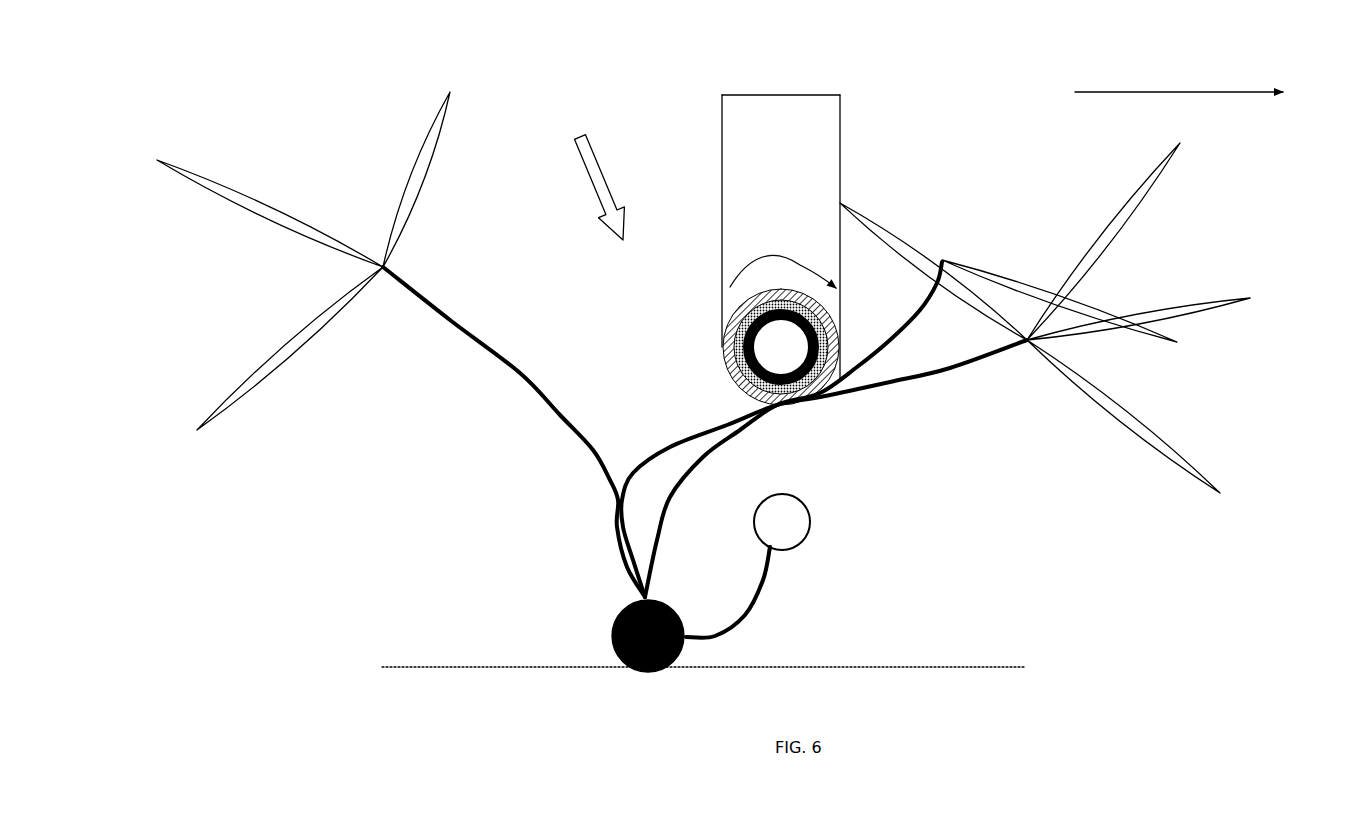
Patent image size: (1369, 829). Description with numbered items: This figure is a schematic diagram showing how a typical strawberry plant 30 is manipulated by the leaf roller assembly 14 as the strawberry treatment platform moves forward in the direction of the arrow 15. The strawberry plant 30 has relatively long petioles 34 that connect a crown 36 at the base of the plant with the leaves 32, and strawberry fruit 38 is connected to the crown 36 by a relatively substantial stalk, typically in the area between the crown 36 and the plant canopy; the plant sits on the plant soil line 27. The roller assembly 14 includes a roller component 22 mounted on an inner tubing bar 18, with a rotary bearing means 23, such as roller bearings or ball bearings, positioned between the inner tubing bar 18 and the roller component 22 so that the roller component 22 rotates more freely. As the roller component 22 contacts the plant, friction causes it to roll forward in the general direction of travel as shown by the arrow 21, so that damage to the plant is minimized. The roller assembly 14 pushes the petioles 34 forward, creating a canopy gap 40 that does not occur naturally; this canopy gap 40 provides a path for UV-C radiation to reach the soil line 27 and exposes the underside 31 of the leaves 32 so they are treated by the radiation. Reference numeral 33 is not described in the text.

The leaf roller assembly 14 is at (879, 162).
The direction of travel arrow 15 is at (1179, 78).
The inner tubing bar 18 is at (796, 327).
The roller rotation arrow 21 is at (755, 260).
The roller component 22 is at (720, 340).
The rotary bearing means 23 is at (828, 315).
The plant soil line 27 is at (517, 667).
The strawberry plant 30 is at (1004, 514).
The underside of the strawberry leaves 31 is at (433, 160).
The leaves 32 is at (262, 238).
The rotor blade 33 is at (407, 177).
The petioles 34 is at (668, 446).
The crown 36 is at (617, 620).
The strawberry fruit 38 is at (793, 532).
The canopy gap 40 is at (589, 171).